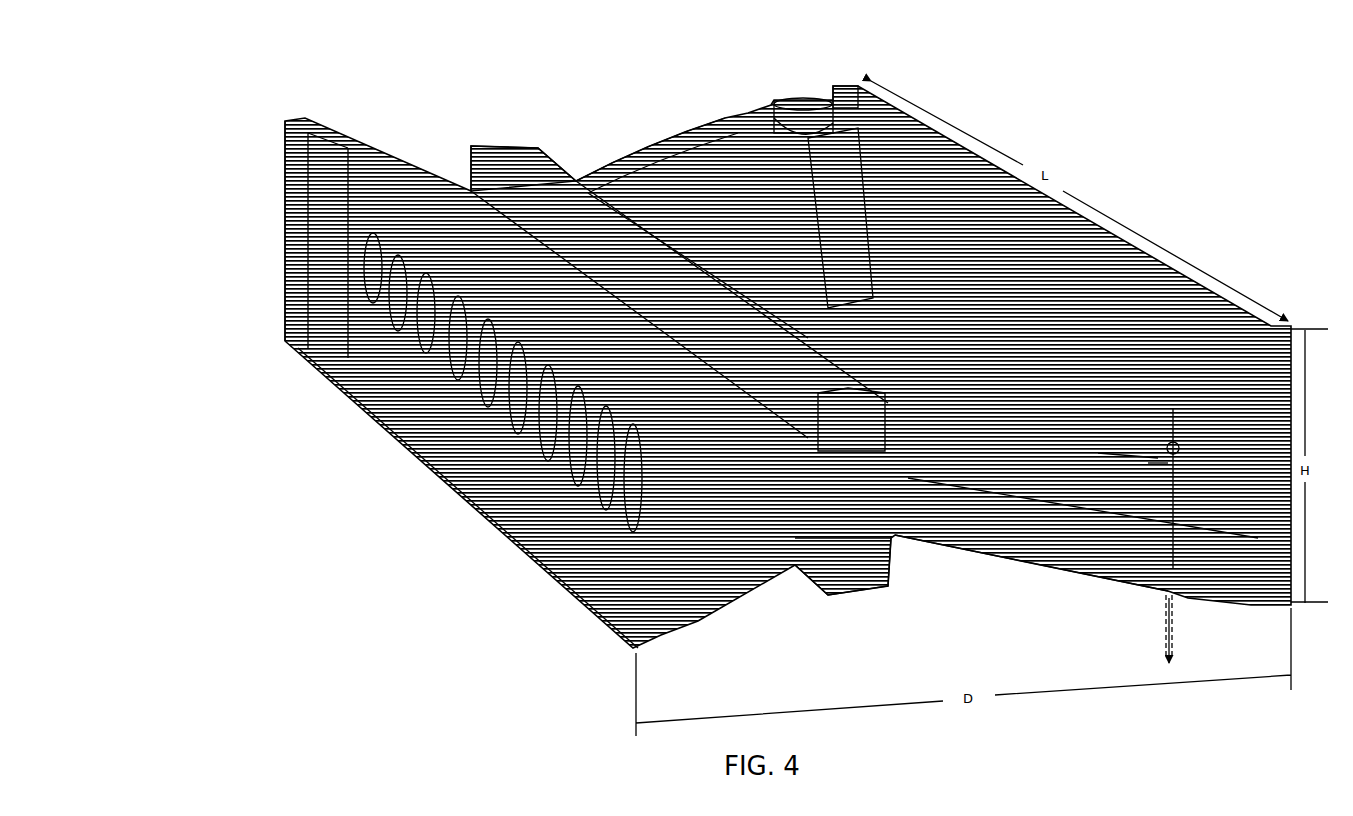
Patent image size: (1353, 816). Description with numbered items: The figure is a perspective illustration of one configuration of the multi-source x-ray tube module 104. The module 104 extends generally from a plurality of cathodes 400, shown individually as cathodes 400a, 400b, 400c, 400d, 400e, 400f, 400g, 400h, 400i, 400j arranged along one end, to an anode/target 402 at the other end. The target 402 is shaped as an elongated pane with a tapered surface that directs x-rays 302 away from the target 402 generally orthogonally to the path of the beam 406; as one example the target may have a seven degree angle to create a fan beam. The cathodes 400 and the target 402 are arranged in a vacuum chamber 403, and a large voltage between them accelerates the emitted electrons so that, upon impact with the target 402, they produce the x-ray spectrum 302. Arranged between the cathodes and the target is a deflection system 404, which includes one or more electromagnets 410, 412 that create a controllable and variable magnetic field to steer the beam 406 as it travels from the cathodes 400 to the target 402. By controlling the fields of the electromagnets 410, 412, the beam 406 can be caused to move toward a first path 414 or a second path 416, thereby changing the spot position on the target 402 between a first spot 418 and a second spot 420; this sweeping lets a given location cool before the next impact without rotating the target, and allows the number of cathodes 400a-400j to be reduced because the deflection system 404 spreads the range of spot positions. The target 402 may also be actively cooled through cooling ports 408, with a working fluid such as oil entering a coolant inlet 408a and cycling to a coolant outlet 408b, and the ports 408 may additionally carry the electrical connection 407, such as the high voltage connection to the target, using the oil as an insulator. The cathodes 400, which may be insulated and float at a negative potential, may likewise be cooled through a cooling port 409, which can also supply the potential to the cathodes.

The multi-source x-ray tube module 104 is at (1172, 78).
The cathodes 400 is at (322, 212).
The cathode 400a is at (355, 243).
The cathode 400b is at (378, 268).
The cathode 400c is at (407, 288).
The cathode 400d is at (470, 363).
The cathode 400e is at (497, 383).
The cathode 400f is at (527, 412).
The cathode 400g is at (557, 433).
The cathode 400h is at (585, 455).
The cathode 400i is at (612, 472).
The cathode 400j is at (640, 490).
The cooling port 409 is at (433, 347).
The deflection system 404 is at (458, 153).
The vacuum chamber 403 is at (688, 125).
The anode/target 402 is at (793, 205).
The cooling ports 408 is at (768, 55).
The coolant inlet 408a is at (787, 92).
The coolant outlet 408b is at (810, 133).
The electrical connection 407 is at (847, 78).
The electromagnet 410 is at (851, 413).
The electromagnet 412 is at (843, 546).
The first path 414 is at (1097, 445).
The second path 416 is at (1148, 452).
The first spot 418 is at (1165, 430).
The second spot 420 is at (1178, 452).
The beam 406 is at (927, 492).
The x-rays 302 is at (1143, 628).